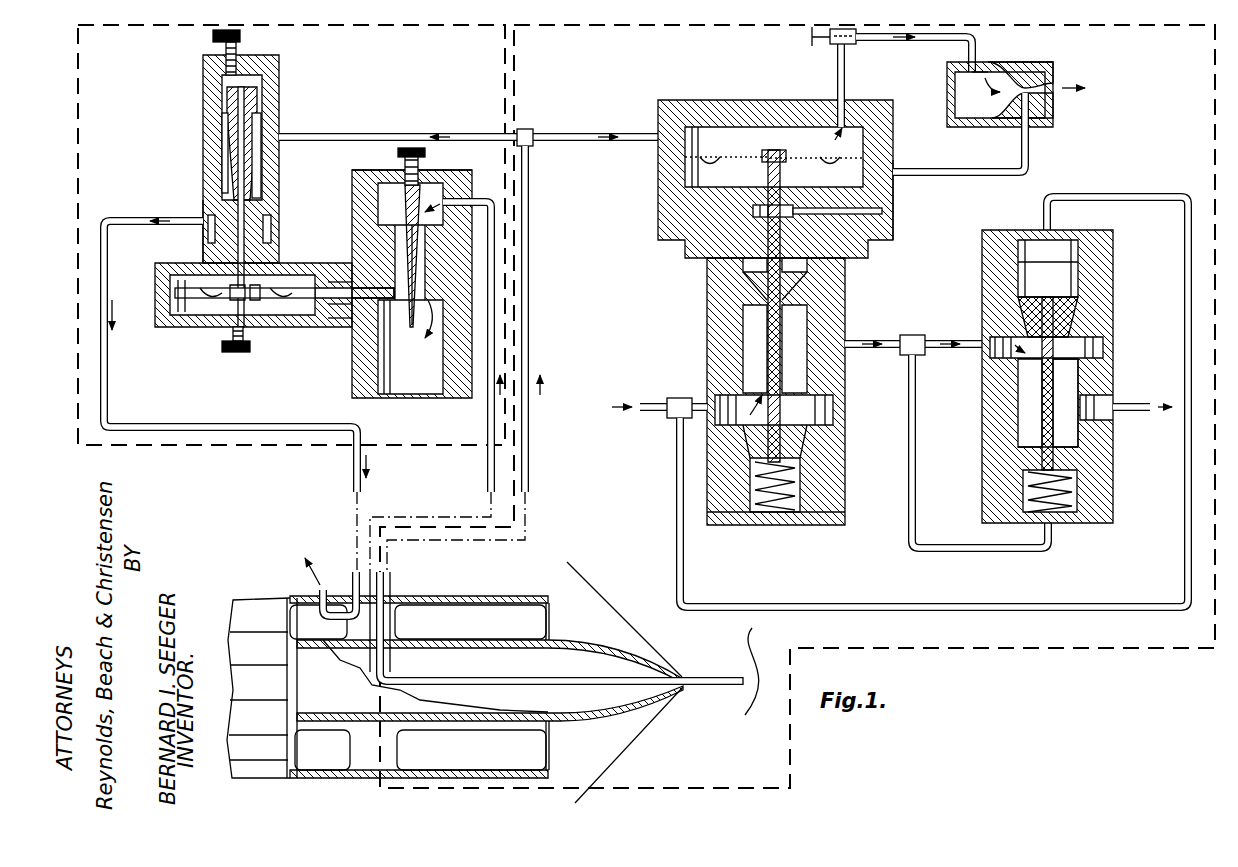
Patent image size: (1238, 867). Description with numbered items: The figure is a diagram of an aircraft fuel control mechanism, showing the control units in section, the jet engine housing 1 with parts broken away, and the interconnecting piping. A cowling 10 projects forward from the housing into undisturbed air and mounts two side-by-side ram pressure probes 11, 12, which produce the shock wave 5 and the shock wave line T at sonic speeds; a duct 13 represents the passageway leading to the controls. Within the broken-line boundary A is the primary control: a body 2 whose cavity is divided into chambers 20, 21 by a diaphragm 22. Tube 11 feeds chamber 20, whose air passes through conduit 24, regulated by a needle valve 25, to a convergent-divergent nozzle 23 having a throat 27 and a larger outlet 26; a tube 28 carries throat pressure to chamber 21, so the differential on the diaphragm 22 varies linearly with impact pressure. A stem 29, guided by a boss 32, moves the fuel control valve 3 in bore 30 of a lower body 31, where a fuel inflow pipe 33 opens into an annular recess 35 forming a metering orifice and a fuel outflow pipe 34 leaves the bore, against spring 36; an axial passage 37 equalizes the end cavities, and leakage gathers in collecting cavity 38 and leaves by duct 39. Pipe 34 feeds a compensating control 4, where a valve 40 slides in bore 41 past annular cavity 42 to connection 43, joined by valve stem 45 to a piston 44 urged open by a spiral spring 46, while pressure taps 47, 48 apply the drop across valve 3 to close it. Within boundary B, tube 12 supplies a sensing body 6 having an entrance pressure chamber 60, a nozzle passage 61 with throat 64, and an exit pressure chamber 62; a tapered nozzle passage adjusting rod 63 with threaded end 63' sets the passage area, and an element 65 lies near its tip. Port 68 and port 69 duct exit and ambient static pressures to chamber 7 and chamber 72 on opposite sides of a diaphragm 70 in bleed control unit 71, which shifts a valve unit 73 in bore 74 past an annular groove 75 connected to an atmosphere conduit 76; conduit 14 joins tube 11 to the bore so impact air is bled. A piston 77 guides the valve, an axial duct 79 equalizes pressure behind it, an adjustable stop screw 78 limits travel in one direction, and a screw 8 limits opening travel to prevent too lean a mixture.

The jet engine housing 1 is at (258, 605).
The body 2 is at (658, 206).
The fuel control valve 3 is at (812, 410).
The compensating control 4 is at (982, 285).
The shock wave 5 is at (583, 570).
The body 6 is at (352, 200).
The chamber 7 is at (245, 289).
The screw 8 is at (240, 352).
The cowling 10 is at (588, 648).
The ram pressure probe 11 is at (531, 226).
The impact pressure probe 12 is at (487, 200).
The duct 13 is at (395, 590).
The conduit 14 is at (365, 137).
The chamber 20 is at (720, 157).
The chamber 21 is at (808, 193).
The diaphragm 22 is at (810, 158).
The convergent-divergent nozzle 23 is at (990, 115).
The conduit 24 is at (978, 48).
The needle valve 25 is at (832, 41).
The outlet 26 is at (1050, 96).
The throat 27 is at (1040, 85).
The tube 28 is at (978, 175).
The stem 29 is at (765, 175).
The bore 30 is at (800, 515).
The lower body 31 is at (708, 285).
The boss 32 is at (796, 283).
The fuel inflow pipe 33 is at (658, 403).
The fuel outflow pipe 34 is at (858, 340).
The annular recess 35 is at (830, 417).
The spring 36 is at (770, 512).
The axial passage 37 is at (768, 330).
The collecting cavity 38 is at (755, 212).
The duct 39 is at (895, 182).
The valve 40 is at (1058, 275).
The bore 41 is at (1080, 376).
The annular cavity 42 is at (1100, 345).
The connection 43 is at (1140, 412).
The piston 44 is at (1030, 455).
The valve stem 45 is at (1040, 390).
The spiral spring 46 is at (1040, 515).
The pressure tap 47 is at (1082, 606).
The pressure tap 48 is at (908, 540).
The entrance pressure chamber 60 is at (355, 188).
The nozzle passage 61 is at (418, 272).
The exit pressure chamber 62 is at (405, 388).
The nozzle passage adjusting rod 63 is at (413, 279).
The threaded end 63' is at (390, 165).
The throat 64 is at (332, 265).
The orifice 65 is at (431, 326).
The port 68 is at (345, 272).
The port 69 is at (345, 316).
The diaphragm 70 is at (262, 297).
The bleed control unit 71 is at (205, 238).
The chamber 72 is at (212, 312).
The valve unit 73 is at (226, 195).
The bore 74 is at (258, 125).
The annular groove 75 is at (268, 222).
The atmosphere conduit 76 is at (178, 427).
The piston 77 is at (225, 95).
The adjustable stop screw 78 is at (240, 37).
The axial duct 79 is at (240, 140).
The broken-line boundary A is at (790, 745).
The broken-line boundary B is at (155, 462).
The shock wave line T is at (772, 628).